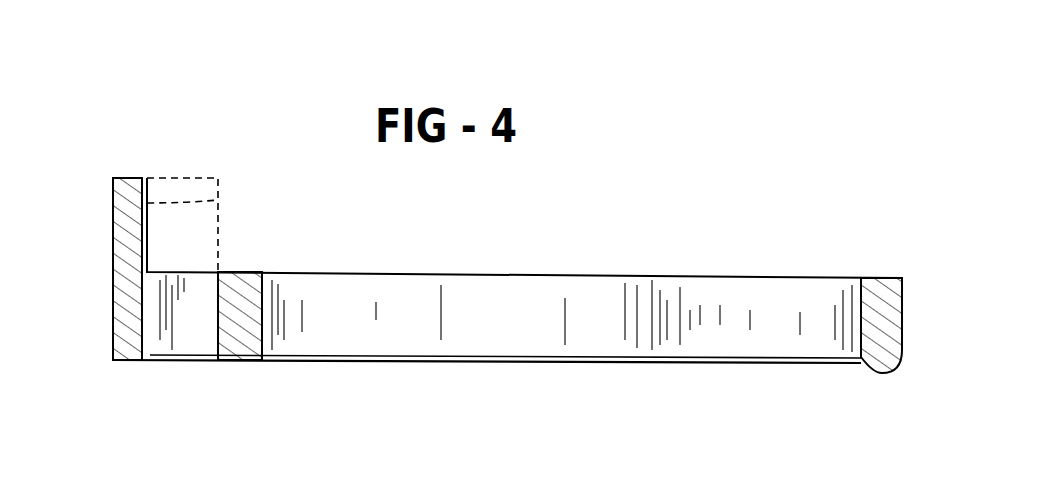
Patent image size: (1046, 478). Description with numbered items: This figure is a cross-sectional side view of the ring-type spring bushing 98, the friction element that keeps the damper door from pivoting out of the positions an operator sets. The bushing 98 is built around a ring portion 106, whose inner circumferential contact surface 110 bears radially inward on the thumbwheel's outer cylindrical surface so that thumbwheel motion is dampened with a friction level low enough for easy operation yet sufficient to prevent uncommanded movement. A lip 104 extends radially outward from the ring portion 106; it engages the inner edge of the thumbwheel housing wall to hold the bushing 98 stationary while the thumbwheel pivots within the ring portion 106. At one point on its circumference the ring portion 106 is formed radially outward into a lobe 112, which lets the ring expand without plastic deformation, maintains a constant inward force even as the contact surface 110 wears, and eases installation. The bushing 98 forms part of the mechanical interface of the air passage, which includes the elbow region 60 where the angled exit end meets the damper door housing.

The elbow region 60 is at (120, 179).
The spring bushing 98 is at (592, 275).
The lip 104 is at (130, 247).
The ring portion 106 is at (497, 297).
The inner circumferential contact surface 110 is at (325, 313).
The lobe 112 is at (828, 347).